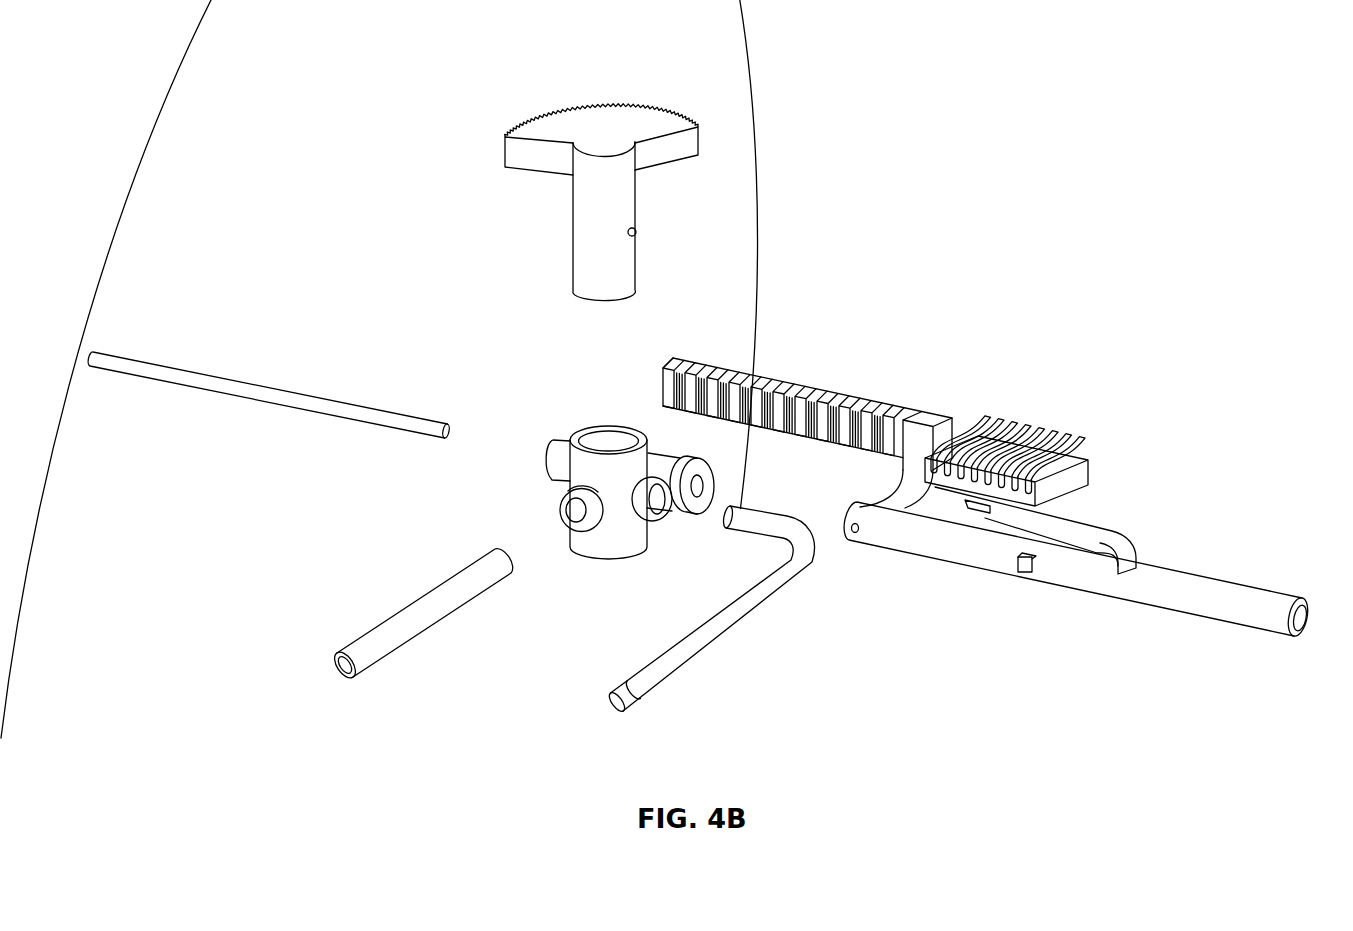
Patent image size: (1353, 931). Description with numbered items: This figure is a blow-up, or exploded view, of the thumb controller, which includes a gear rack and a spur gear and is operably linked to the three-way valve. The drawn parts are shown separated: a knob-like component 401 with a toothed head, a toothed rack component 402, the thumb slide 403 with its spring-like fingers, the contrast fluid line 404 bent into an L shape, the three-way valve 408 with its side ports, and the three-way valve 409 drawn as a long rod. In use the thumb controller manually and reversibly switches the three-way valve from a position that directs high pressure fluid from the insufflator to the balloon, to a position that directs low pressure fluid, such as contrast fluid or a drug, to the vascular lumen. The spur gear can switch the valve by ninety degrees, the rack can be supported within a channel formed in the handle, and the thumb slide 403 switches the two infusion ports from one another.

The adjustment knob 401 is at (617, 103).
The rack 402 is at (793, 383).
The thumb slide 403 is at (1042, 423).
The contrast fluid line 404 is at (743, 617).
The 3-way valve 408 is at (637, 540).
The 3-way valve 409 is at (390, 420).